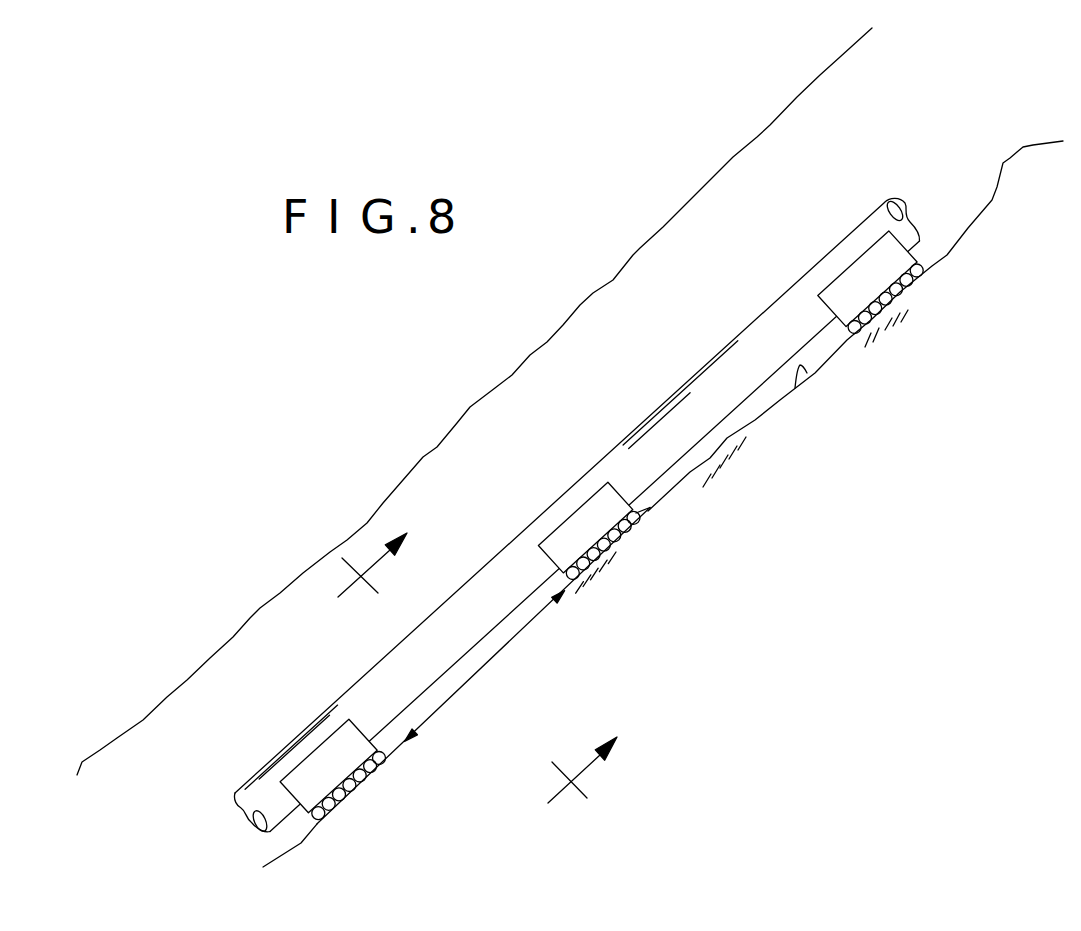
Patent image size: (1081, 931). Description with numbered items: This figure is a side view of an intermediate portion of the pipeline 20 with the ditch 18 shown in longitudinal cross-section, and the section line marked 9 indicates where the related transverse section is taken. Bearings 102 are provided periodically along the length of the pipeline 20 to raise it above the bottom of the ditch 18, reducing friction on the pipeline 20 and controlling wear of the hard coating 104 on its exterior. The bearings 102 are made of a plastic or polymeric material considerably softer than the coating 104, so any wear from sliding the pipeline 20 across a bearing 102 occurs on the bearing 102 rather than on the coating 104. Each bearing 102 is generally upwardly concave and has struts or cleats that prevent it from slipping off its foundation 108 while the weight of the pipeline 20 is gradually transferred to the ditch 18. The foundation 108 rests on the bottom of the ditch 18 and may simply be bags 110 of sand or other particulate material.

The ditch 18 is at (807, 373).
The pipeline 20 is at (576, 515).
The bearing 102 is at (826, 306).
The coating 104 is at (497, 621).
The foundation 108 is at (520, 604).
The bags 110 is at (649, 509).
The section line 9- 9 is at (468, 680).